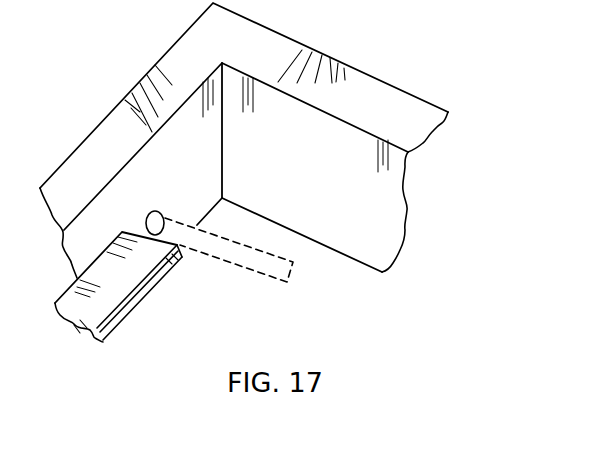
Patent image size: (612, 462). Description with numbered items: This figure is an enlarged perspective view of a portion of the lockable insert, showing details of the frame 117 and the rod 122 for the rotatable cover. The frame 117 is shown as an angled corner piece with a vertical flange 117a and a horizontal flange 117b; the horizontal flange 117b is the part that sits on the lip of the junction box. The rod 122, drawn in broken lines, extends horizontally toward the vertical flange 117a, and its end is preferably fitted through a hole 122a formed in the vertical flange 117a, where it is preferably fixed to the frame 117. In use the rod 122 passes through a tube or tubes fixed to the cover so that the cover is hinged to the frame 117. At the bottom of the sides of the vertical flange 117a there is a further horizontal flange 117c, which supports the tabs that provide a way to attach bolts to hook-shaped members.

The frame 117 is at (352, 262).
The vertical flange 117a is at (406, 208).
The horizontal flange 117b is at (428, 122).
The horizontal flange 117c is at (142, 308).
The rod 122 is at (256, 276).
The holes 122a is at (157, 211).